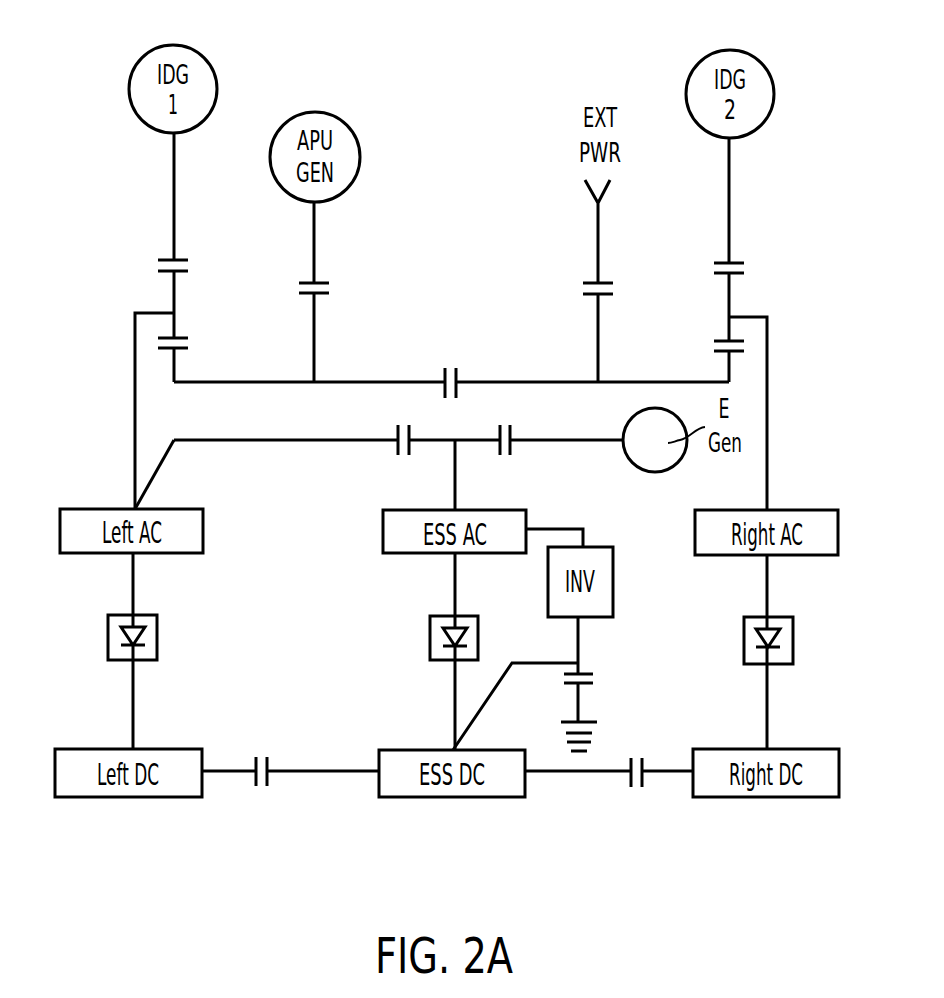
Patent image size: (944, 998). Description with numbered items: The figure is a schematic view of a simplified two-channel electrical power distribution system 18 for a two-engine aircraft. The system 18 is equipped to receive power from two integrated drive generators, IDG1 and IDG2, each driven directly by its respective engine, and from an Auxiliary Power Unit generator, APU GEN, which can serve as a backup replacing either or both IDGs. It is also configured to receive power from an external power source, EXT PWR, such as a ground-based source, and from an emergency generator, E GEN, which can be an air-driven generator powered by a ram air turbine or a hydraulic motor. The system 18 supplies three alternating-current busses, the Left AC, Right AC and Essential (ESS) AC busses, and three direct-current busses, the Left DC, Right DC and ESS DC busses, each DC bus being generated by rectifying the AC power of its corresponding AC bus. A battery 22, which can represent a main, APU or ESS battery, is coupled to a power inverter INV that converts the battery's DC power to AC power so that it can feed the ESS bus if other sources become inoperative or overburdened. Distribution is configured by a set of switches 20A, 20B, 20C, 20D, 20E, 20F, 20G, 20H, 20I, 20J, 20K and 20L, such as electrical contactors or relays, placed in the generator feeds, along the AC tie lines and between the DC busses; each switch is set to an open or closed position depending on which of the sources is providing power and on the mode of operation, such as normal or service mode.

The electrical power distribution system 18 is at (462, 93).
The switch 20A is at (146, 258).
The switch 20B is at (203, 342).
The switch 20C is at (343, 284).
The switch 20D is at (626, 285).
The switch 20E is at (758, 264).
The switch 20F is at (758, 343).
The switch 20G is at (450, 345).
The switch 20H is at (384, 429).
The switch 20I is at (525, 431).
The switch 20J is at (262, 804).
The switch 20K is at (638, 802).
The switch 20L is at (613, 677).
The battery 22 is at (610, 738).